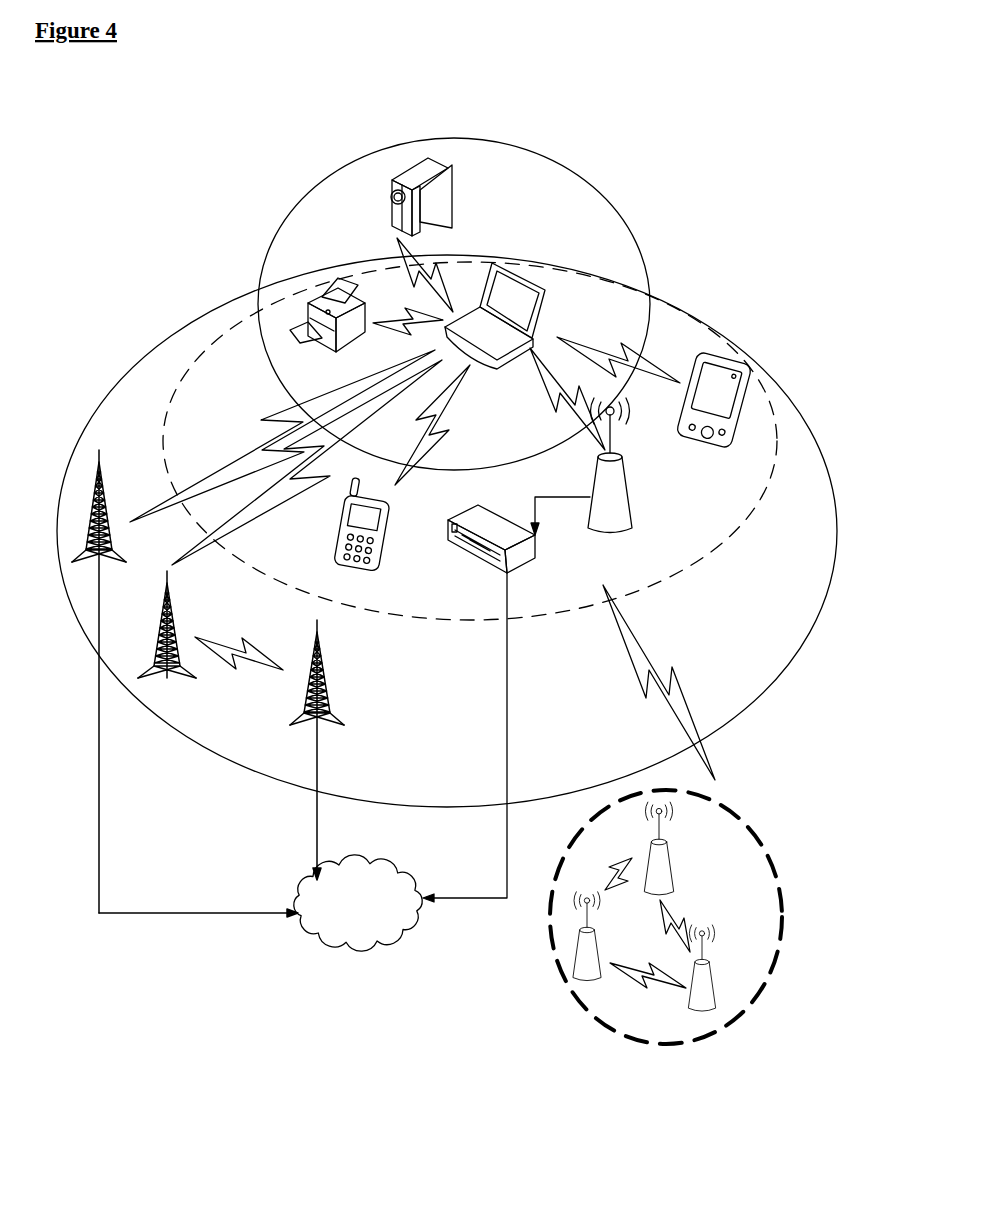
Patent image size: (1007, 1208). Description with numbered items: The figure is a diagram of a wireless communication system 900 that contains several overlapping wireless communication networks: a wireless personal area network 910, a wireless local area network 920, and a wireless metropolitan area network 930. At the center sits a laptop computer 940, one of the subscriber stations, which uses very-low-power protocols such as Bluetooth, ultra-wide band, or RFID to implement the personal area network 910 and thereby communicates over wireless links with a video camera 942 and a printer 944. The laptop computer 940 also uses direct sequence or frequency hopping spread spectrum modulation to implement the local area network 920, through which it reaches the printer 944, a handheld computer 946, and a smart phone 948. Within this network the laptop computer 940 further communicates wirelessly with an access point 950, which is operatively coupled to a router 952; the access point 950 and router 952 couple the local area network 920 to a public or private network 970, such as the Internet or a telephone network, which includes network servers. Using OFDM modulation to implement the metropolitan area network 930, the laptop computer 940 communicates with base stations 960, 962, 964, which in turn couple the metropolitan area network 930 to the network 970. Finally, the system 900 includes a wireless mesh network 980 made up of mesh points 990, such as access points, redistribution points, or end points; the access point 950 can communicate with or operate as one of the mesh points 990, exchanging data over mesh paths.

The wireless communication system 900 is at (678, 170).
The wireless personal area network (WPAN) 910 is at (261, 275).
The wireless local area network (WLAN) 920 is at (203, 345).
The wireless metropolitan area network (WMAN) 930 is at (135, 357).
The laptop computer 940 is at (521, 270).
The video camera 942 is at (450, 206).
The printer 944 is at (350, 350).
The handheld computer 946 is at (722, 450).
The smart phone 948 is at (384, 573).
The access point (AP) 950 is at (620, 528).
The router 952 is at (525, 570).
The base station 960 is at (99, 470).
The base station 962 is at (178, 634).
The base station 964 is at (333, 693).
The network 970 is at (412, 871).
The wireless mesh network 980 is at (740, 821).
The mesh points (MPs) 990 is at (704, 897).